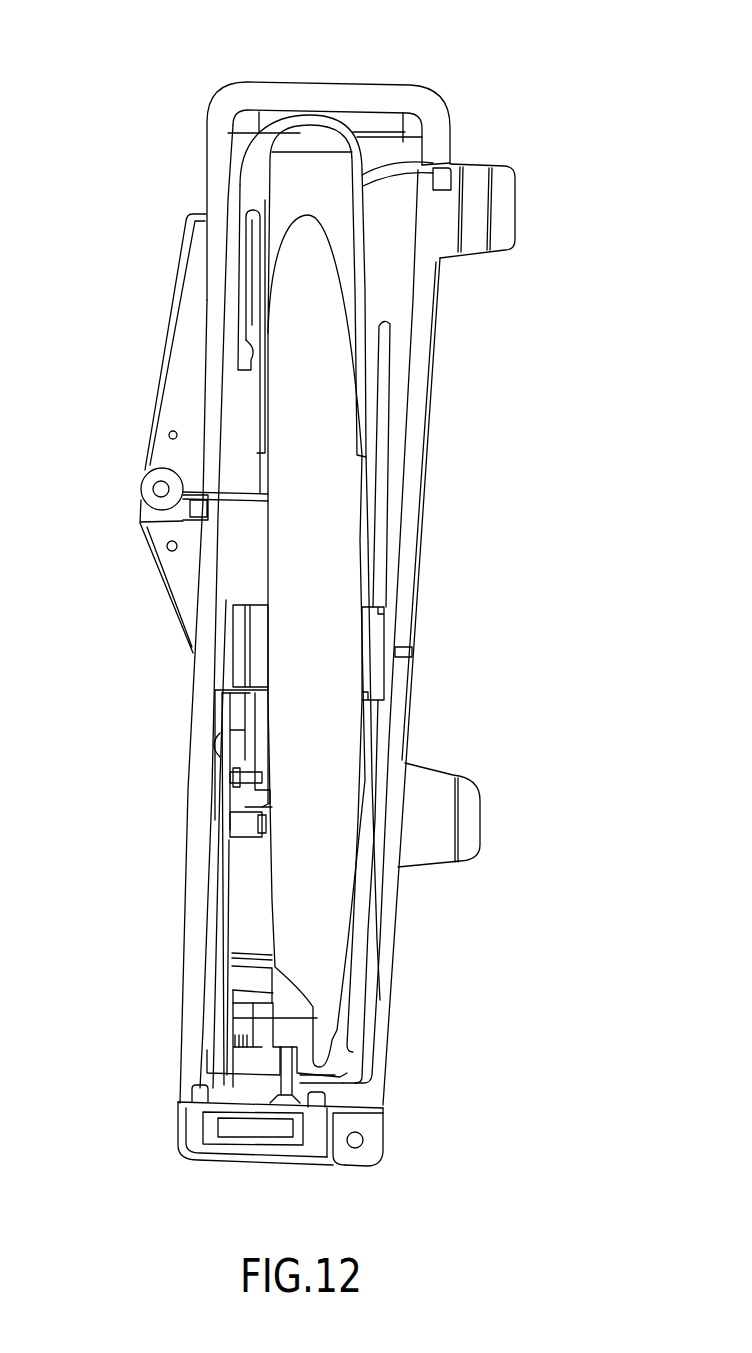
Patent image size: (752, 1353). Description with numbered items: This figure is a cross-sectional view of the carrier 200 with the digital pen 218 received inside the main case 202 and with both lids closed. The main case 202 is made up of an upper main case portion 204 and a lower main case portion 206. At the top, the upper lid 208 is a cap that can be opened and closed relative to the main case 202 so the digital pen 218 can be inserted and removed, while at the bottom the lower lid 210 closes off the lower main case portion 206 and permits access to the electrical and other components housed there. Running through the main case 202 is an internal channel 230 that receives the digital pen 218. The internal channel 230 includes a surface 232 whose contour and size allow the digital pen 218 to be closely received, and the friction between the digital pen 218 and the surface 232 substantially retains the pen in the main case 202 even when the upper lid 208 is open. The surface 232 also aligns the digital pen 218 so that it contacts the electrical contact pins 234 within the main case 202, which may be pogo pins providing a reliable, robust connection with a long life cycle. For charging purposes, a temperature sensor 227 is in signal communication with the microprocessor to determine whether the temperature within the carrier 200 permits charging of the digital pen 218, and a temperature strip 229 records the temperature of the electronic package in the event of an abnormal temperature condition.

The carrier 200 is at (522, 70).
The main case 202 is at (480, 403).
The upper main case portion 204 is at (438, 311).
The lower main case portion 206 is at (397, 922).
The upper lid 208 is at (174, 280).
The lower lid 210 is at (227, 1160).
The digital pen 218 is at (270, 183).
The temperature sensor 227 is at (258, 1018).
The temperature strip 229 is at (230, 993).
The internal channel 230 is at (263, 567).
The surface 232 is at (270, 636).
The electrical contact pins 234 is at (232, 792).